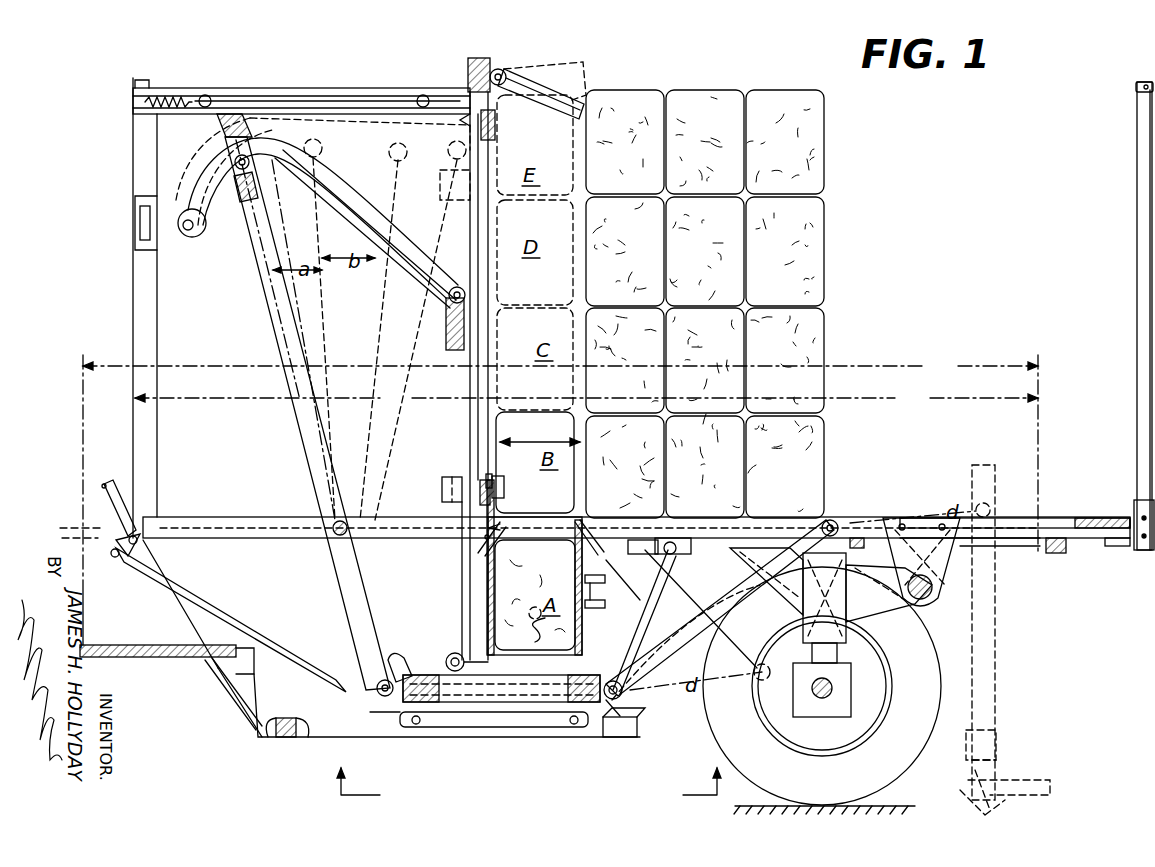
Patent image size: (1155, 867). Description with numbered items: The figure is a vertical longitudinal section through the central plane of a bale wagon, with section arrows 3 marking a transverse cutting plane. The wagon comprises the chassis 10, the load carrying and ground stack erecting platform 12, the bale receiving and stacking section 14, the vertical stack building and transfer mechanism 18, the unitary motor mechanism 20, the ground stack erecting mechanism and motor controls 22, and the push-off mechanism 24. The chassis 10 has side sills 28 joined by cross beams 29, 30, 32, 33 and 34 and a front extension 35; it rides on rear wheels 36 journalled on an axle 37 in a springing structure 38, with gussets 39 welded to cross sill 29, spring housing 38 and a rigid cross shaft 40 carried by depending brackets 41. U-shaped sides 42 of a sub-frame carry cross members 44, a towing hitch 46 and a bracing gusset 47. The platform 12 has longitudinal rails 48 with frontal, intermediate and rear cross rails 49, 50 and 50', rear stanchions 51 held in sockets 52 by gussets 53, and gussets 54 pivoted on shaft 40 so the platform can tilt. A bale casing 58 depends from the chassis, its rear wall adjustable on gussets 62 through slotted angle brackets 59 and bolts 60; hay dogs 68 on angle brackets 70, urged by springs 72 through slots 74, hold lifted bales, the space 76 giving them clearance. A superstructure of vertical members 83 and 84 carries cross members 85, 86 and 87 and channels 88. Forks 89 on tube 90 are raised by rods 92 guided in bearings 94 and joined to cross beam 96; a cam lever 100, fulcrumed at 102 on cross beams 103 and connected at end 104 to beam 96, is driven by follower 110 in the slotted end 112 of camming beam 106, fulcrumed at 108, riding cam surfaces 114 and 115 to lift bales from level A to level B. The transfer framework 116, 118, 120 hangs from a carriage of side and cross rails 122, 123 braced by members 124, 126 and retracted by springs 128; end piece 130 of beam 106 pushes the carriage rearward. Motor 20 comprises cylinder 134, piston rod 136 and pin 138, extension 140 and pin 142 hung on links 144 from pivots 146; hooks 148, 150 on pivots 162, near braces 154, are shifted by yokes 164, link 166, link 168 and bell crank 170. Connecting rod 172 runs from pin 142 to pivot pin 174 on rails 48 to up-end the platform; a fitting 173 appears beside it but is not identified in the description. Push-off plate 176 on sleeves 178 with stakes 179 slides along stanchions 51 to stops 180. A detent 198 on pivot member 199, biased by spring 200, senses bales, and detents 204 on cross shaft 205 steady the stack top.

The wagon chassis 10 is at (560, 499).
The load carrying and ground stack erecting platform 12 is at (586, 398).
The bale receiving and stacking section 14 is at (540, 442).
The vertical stack building and transfer mechanism 18 is at (395, 398).
The unitary motor mechanism 20 is at (524, 786).
The ground stack erecting mechanism and unit motor controls 22 is at (466, 740).
The push-off mechanism 24 is at (1132, 498).
The side rails or sills 28 is at (268, 538).
The cross beam 29 is at (756, 538).
The cross beam 30 is at (678, 540).
The cross beam 32 is at (650, 540).
The cross beam 33 is at (375, 520).
The cross beam 34 is at (170, 540).
The chassis front extension 35 is at (282, 505).
The supporting wheels 36 is at (916, 760).
The axle 37 is at (832, 690).
The axle springing structure 38 is at (834, 596).
The flanged gussets 39 is at (794, 596).
The rigid chassis bracing cross shaft 40 is at (933, 594).
The depending flanged brackets 41 is at (967, 546).
The U-shaped sub-frame sides 42 is at (192, 616).
The sub-frame cross members 44 is at (238, 714).
The towing hitch 46 is at (142, 656).
The bracing gusset 47 is at (206, 688).
The longitudinal rails 48 is at (1010, 516).
The frontal cross rail 49 is at (628, 540).
The intermediate cross rail 50 is at (870, 522).
The rear cross rail 50' is at (1063, 560).
The vertical rear end stanchions 51 is at (1136, 262).
The stanchion sockets 52 is at (1118, 548).
The connecting gussets 53 is at (1068, 554).
The gussets 54 is at (950, 563).
The bale receiving and supporting casing 58 is at (490, 578).
The slotted angle brackets 59 is at (605, 604).
The bolts 60 is at (592, 608).
The gussets 62 is at (605, 580).
The hay dogs 68 is at (600, 492).
The angle brackets 70 is at (478, 540).
The dog springs 72 is at (480, 556).
The slots 74 is at (510, 483).
The space 76 is at (628, 578).
The vertical frame members 83 is at (468, 222).
The vertical frame members 84 is at (133, 298).
The transverse frame member 85 is at (483, 476).
The transverse frame member 86 is at (478, 56).
The transverse frame member 87 is at (165, 98).
The channel members 88 is at (282, 92).
The lifting forks 89 is at (543, 510).
The fork supporting tube 90 is at (448, 660).
The vertically reciprocable rods 92 is at (480, 440).
The aligning bearings 94 is at (442, 488).
The vertically reciprocable cross beam 96 is at (446, 340).
The cam lever 100 is at (323, 178).
The fulcrum 102 is at (191, 230).
The intermediate cross beams 103 is at (134, 226).
The cam lever end 104 is at (448, 300).
The camming beam 106 is at (262, 316).
The fulcrum 108 is at (334, 534).
The cam follower roller 110 is at (208, 221).
The slotted upper end 112 is at (258, 200).
The cam surface 114 is at (292, 166).
The cam surface 115 is at (372, 296).
The transfer framework member 116 is at (480, 190).
The transfer framework member 118 is at (565, 240).
The upper cross member 120 is at (498, 116).
The carriage side rails 122 is at (383, 98).
The carriage cross rails 123 is at (345, 98).
The angular brace 124 is at (466, 122).
The diagonal brace 126 is at (305, 330).
The adjustable tension springs 128 is at (140, 86).
The end piece 130 is at (244, 112).
The cylinder 134 is at (510, 704).
The piston rod 136 is at (380, 716).
The piston rod pin 138 is at (376, 692).
The fixed extension 140 is at (606, 718).
The cross pin 142 is at (618, 702).
The oscillatable links 144 is at (748, 646).
The pivots 146 is at (672, 536).
The rear duplex hooks 148 is at (645, 712).
The front duplex hooks 150 is at (396, 658).
The braces 154 is at (612, 680).
The pivots 162 is at (420, 702).
The operating yokes 164 is at (398, 730).
The longitudinal link 166 is at (524, 728).
The link 168 is at (262, 644).
The bell crank lever 170 is at (104, 486).
The connecting rod link 172 is at (736, 596).
The hitch bracket 173 is at (1141, 581).
The pivot pin 174 is at (834, 520).
The push off plate 176 is at (1098, 516).
The sleeves 178 is at (1140, 498).
The hook-shaped stakes 179 is at (980, 806).
The stops 180 is at (1134, 88).
The switch actuating detent 198 is at (544, 483).
The pivot member 199 is at (512, 572).
The compression spring 200 is at (515, 625).
The detents 204 is at (565, 94).
The cross shaft 205 is at (502, 72).
The section line 3- 3 is at (526, 794).